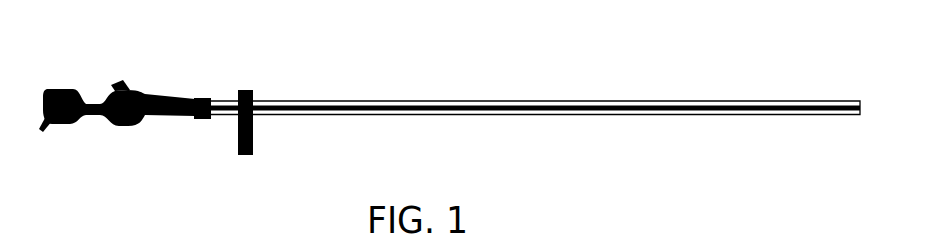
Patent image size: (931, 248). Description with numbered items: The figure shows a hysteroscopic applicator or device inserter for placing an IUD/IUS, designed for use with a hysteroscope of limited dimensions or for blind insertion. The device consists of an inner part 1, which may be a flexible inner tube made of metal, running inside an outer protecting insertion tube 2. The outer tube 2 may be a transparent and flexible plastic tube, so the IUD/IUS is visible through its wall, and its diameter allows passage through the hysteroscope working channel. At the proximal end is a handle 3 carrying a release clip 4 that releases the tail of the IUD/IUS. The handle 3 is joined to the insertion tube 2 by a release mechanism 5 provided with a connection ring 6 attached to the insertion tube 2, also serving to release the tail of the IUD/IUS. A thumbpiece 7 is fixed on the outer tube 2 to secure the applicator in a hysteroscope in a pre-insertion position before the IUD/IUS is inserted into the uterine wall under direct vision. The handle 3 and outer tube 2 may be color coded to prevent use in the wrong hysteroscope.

The inner part 1 is at (530, 106).
The outer protecting (insertion) tube 2 is at (297, 100).
The handle 3 is at (97, 102).
The release clip 4 is at (44, 129).
The release mechanism 5 is at (128, 88).
The connection ring 6 is at (203, 120).
The thumbpiece 7 is at (254, 143).